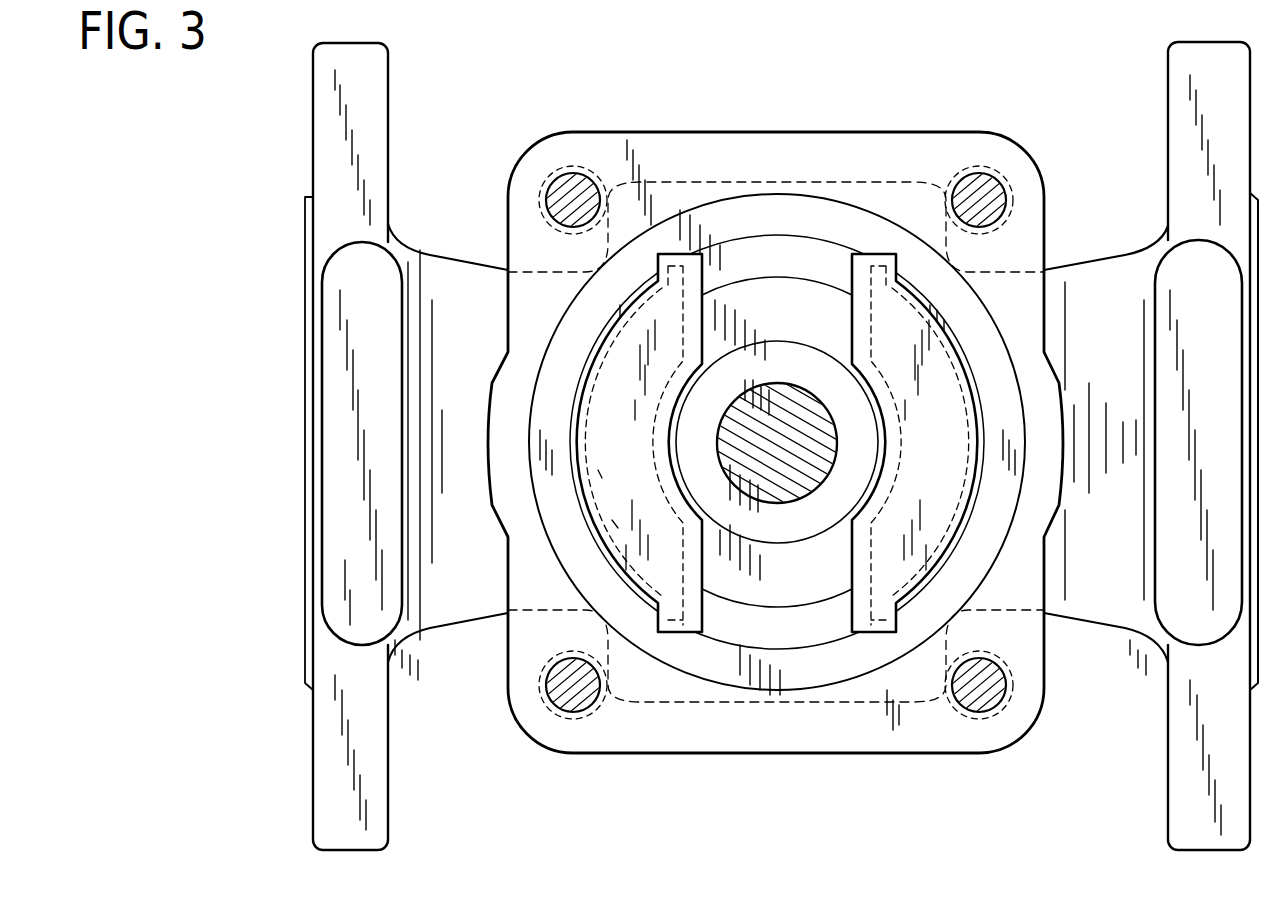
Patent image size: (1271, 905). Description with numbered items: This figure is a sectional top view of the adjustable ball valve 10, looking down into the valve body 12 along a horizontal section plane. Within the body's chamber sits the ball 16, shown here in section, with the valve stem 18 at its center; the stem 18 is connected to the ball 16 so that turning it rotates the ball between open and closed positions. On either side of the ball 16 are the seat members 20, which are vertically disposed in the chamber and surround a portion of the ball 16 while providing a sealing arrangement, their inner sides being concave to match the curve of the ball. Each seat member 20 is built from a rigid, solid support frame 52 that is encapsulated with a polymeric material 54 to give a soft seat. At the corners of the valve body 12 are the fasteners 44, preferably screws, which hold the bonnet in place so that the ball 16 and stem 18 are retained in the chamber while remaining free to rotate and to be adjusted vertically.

The adjustable ball valve 10 is at (497, 68).
The valve body 12 is at (460, 277).
The ball 16 is at (828, 324).
The valve stem 18 is at (806, 483).
The seat members 20 is at (628, 457).
The fasteners 44 is at (560, 692).
The support frame 52 is at (623, 511).
The polymeric material 54 is at (583, 372).